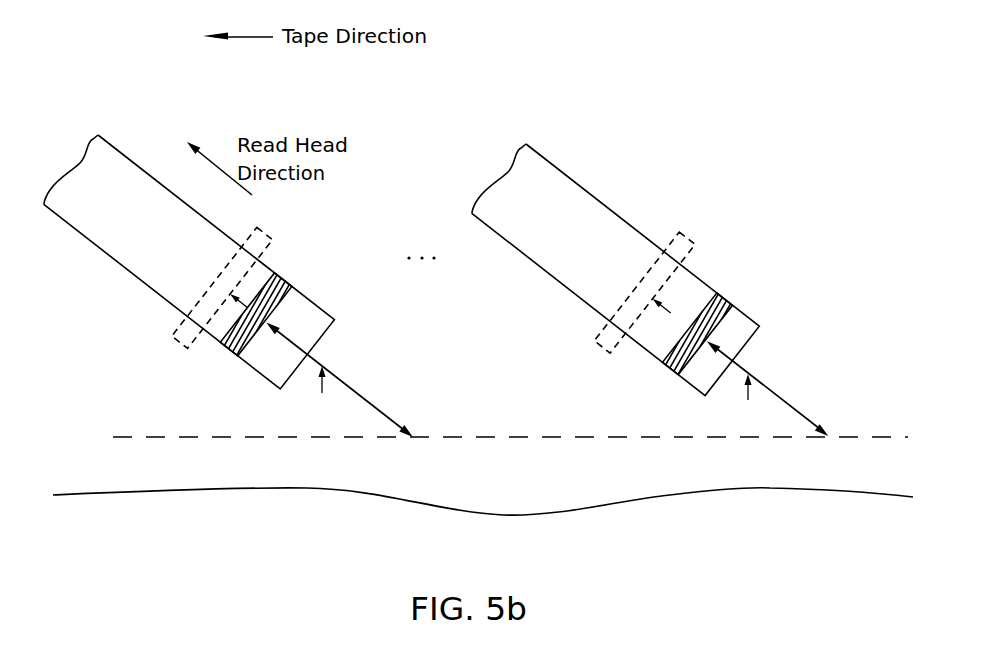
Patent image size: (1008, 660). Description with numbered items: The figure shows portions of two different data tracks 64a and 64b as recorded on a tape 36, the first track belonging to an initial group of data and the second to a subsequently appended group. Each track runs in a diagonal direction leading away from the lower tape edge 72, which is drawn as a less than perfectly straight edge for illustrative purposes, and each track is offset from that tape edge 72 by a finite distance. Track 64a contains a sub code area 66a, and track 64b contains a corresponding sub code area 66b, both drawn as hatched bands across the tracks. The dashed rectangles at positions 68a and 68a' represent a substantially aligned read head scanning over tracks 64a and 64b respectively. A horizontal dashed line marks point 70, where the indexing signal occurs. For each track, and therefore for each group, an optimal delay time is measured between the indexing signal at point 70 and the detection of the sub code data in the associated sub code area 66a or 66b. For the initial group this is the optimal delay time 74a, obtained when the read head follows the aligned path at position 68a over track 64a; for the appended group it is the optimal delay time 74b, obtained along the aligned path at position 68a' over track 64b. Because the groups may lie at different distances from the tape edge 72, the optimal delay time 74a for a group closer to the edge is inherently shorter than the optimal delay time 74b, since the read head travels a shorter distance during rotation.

The tape 36 is at (668, 114).
The data track 64a is at (163, 248).
The data track 64b is at (593, 250).
The sub code area 66a is at (282, 296).
The sub code area 66b is at (687, 368).
The read head position 68a is at (255, 279).
The read head position 68a' is at (679, 280).
The indexing signal point 70 is at (198, 437).
The lower tape edge 72 is at (307, 490).
The optimal delay time t_REF(a) 74a is at (342, 381).
The optimal delay time t_REF(b) 74b is at (761, 384).